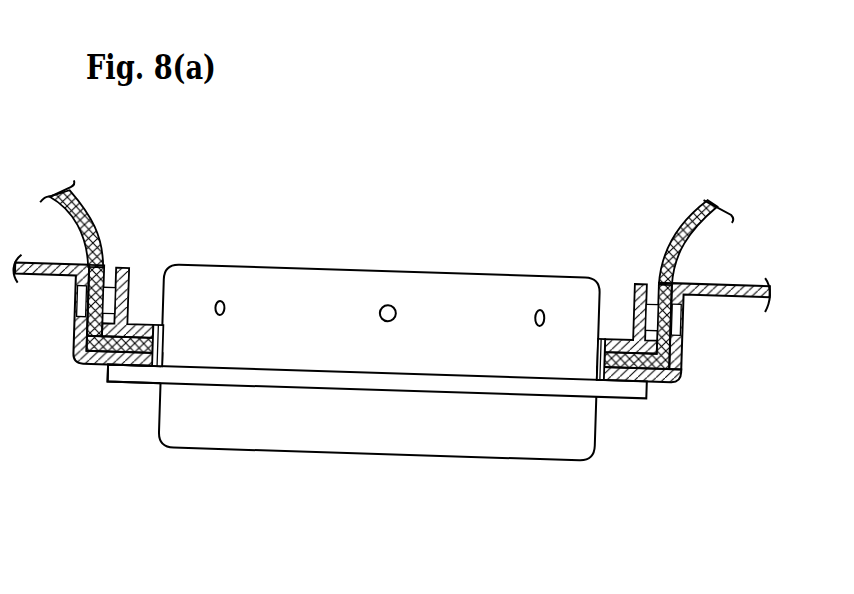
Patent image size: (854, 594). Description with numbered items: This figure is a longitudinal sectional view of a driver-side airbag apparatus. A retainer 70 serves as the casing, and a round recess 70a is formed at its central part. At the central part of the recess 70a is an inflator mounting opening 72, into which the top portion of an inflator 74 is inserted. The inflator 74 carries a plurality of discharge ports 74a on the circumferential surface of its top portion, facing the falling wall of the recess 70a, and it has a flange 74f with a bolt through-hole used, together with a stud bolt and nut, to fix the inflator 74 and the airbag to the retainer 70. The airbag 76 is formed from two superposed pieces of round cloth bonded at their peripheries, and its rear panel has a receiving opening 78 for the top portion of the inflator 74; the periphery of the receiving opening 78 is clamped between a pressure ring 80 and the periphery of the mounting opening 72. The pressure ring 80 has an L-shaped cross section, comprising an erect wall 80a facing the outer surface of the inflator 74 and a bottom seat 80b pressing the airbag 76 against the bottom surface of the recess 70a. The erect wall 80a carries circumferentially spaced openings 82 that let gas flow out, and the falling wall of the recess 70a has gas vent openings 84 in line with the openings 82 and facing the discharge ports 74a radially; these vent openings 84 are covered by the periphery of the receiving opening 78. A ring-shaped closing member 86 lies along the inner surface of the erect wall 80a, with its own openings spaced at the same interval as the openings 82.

The retainer 70 is at (733, 286).
The round recess 70a is at (684, 351).
The inflator mounting opening 72 is at (617, 382).
The inflator 74 is at (497, 461).
The discharge ports 74a is at (228, 307).
The flange 74f is at (117, 385).
The airbag 76 is at (75, 205).
The receiving opening 78 is at (160, 345).
The pressure ring 80 is at (656, 280).
The erect wall 80a is at (100, 265).
The bottom seat 80b is at (143, 325).
The openings 82 is at (130, 268).
The gas vent openings 84 is at (75, 301).
The closing member 86 is at (640, 297).